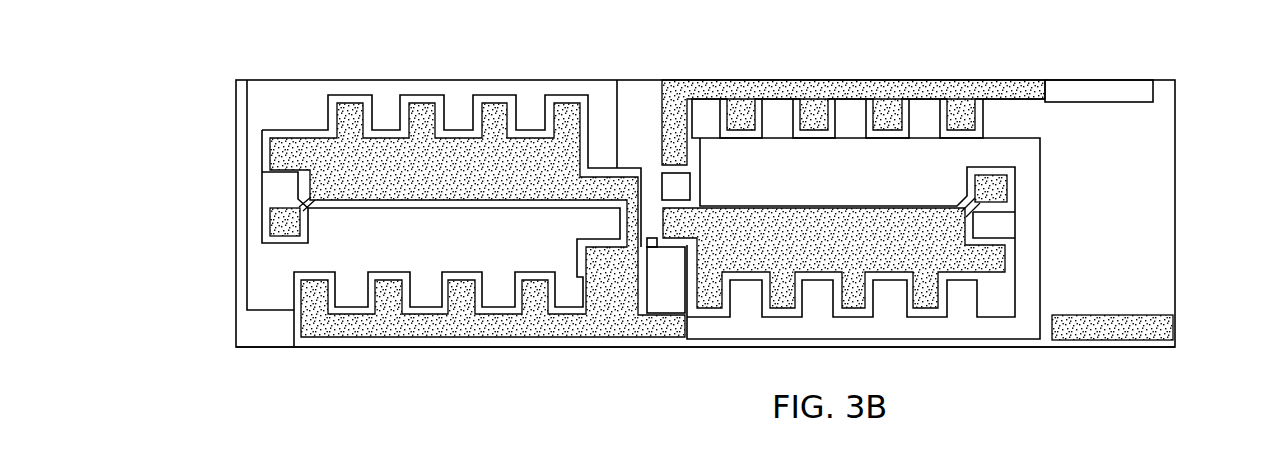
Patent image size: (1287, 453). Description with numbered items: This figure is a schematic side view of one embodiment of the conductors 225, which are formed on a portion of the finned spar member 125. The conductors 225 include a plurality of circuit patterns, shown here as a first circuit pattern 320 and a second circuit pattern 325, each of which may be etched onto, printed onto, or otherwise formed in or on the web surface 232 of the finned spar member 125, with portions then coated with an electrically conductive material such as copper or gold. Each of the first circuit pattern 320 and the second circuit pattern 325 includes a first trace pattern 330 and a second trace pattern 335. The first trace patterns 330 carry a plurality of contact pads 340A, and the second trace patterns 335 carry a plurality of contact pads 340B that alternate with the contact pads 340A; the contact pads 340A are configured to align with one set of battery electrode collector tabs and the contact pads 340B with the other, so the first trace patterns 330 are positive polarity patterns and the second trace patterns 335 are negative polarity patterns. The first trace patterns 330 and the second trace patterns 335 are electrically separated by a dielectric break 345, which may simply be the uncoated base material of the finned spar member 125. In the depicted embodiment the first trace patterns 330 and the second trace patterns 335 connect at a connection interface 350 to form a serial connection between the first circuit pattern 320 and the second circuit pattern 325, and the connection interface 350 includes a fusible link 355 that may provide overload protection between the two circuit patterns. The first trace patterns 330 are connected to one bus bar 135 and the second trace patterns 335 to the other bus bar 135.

The finned spar member 125 is at (1176, 78).
The bus bar 135 is at (1114, 90).
The conductors 225 is at (861, 41).
The web surface 232 is at (1152, 197).
The first circuit pattern 320 is at (598, 70).
The second circuit pattern 325 is at (968, 72).
The first trace pattern 330 is at (471, 249).
The second trace pattern 335 is at (856, 253).
The contact pads 340A is at (456, 110).
The contact pads 340B is at (272, 223).
The dielectric break 345 is at (302, 316).
The connection interface 350 is at (660, 365).
The fusible link 355 is at (652, 238).